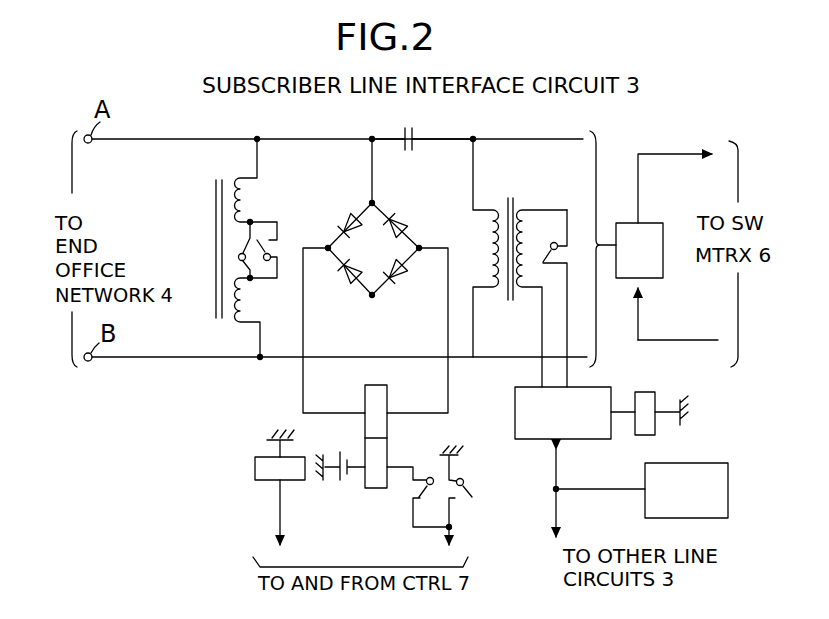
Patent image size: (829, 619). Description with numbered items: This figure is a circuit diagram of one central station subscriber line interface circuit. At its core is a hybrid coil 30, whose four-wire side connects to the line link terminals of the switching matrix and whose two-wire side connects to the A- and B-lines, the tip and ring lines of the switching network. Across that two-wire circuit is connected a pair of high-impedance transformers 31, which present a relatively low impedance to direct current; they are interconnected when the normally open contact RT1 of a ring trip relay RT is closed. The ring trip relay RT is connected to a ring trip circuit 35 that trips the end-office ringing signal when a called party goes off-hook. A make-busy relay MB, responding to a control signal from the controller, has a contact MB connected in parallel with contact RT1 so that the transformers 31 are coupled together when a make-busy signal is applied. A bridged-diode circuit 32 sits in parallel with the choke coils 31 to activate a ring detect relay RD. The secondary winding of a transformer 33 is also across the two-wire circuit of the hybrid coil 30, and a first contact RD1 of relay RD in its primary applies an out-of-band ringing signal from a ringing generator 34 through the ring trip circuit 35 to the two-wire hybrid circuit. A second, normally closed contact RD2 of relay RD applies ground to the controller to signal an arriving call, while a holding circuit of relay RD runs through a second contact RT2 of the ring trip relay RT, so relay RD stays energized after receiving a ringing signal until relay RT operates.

The hybrid coil 30 is at (650, 222).
The high-impedance transformers 31 is at (232, 178).
The bridged-diode circuit 32 is at (353, 203).
The transformer 33 is at (518, 200).
The ringing generator 34 is at (645, 480).
The ring trip circuit 35 is at (515, 415).
The make-busy relay MB is at (263, 250).
The ring trip relay RT is at (642, 392).
The ring detect relay RD is at (387, 397).
The first contact of ring trip relay RT1 is at (236, 254).
The second contact of ring trip relay RT2 is at (418, 490).
The first contact of ring detect relay RD1 is at (540, 240).
The second contact of ring detect relay RD2 is at (475, 494).